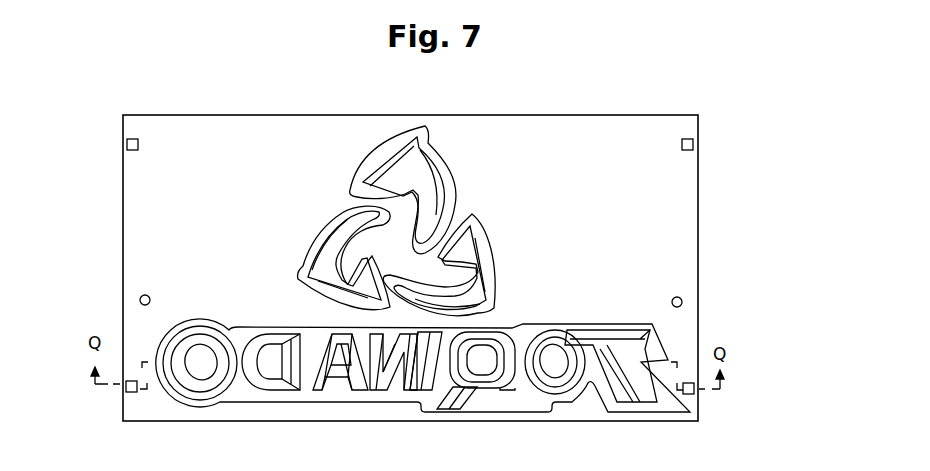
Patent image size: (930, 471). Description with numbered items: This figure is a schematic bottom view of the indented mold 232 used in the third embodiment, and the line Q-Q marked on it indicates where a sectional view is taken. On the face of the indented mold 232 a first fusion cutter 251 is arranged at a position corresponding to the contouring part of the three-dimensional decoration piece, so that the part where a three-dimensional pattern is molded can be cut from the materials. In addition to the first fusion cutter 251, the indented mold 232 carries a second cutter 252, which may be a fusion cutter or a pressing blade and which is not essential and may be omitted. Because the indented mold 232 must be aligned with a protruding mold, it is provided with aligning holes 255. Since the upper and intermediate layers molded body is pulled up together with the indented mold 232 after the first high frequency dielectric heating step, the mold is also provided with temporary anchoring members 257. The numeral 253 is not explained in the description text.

The indented mold 232 is at (708, 223).
The first fusion cutter 251 is at (363, 172).
The second cutter 252 is at (346, 212).
The text characters 253 is at (190, 320).
The aligning holes 255 is at (140, 297).
The temporary anchoring members 257 is at (128, 139).